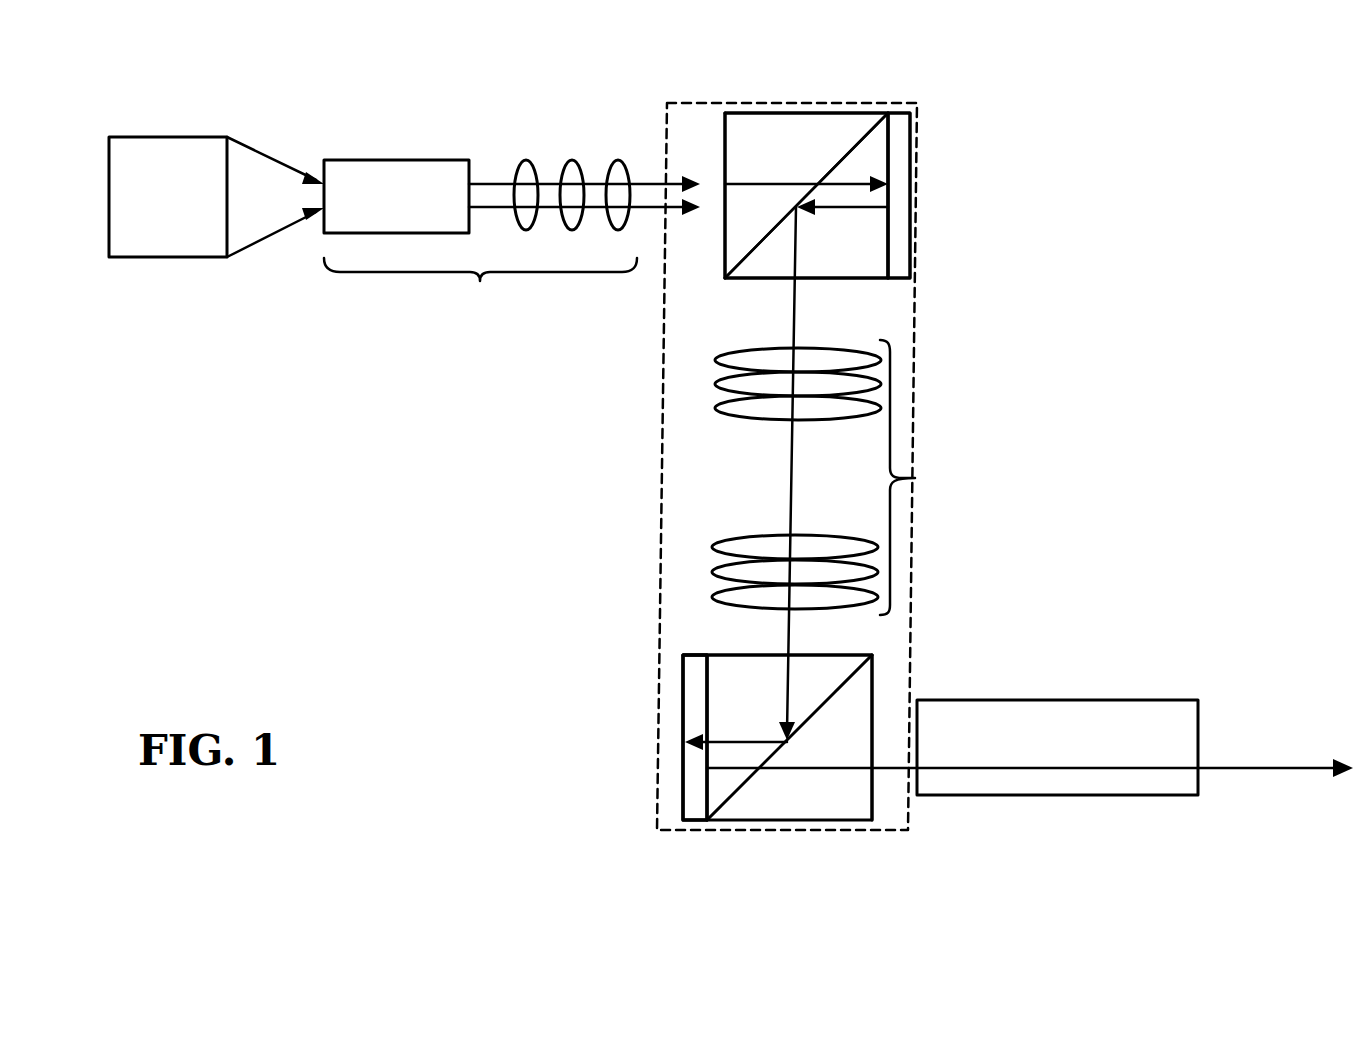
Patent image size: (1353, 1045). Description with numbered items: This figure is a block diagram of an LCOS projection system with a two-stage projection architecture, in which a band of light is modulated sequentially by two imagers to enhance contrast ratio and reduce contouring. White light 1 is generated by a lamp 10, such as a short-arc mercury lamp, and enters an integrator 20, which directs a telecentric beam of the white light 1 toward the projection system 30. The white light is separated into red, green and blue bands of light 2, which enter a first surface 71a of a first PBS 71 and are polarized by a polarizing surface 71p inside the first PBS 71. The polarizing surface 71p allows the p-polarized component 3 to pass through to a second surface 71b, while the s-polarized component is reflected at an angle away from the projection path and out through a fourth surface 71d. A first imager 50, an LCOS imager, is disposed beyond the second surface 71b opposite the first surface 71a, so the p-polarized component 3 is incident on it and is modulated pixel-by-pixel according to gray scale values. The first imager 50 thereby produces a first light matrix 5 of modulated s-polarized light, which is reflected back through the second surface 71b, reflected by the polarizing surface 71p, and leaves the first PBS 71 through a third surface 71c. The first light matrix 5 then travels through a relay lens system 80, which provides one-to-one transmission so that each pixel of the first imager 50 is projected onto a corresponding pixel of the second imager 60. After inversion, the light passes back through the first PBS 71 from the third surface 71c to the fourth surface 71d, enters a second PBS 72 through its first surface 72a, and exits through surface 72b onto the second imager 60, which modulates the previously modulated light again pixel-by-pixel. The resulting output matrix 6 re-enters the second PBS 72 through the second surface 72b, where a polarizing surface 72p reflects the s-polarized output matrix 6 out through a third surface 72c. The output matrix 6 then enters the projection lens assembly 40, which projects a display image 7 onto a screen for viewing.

The lamp 10 is at (147, 137).
The white light 1 is at (275, 158).
The integrator 20 is at (480, 242).
The RGB bands of light 2 is at (650, 182).
The projection system 30 is at (708, 150).
The first PBS 71 is at (730, 117).
The first surface of first PBS 71a is at (715, 250).
The second surface of first PBS 71b is at (878, 252).
The third surface of first PBS 71c is at (755, 265).
The fourth surface of first PBS 71d is at (772, 103).
The polarizing surface of first PBS 71p is at (768, 284).
The p-polarized component 3 is at (848, 182).
The first imager 50 is at (917, 152).
The first light matrix 5 is at (796, 305).
The relay lens system 80 is at (915, 478).
The second PBS 72 is at (875, 668).
The first surface of second PBS 72a is at (705, 645).
The second surface of second PBS 72b is at (722, 815).
The third surface of second PBS 72c is at (886, 823).
The polarizing surface of second PBS 72p is at (862, 660).
The second imager 60 is at (683, 695).
The output matrix 6 is at (905, 768).
The projection lens assembly 40 is at (1130, 700).
The display image 7 is at (1270, 765).